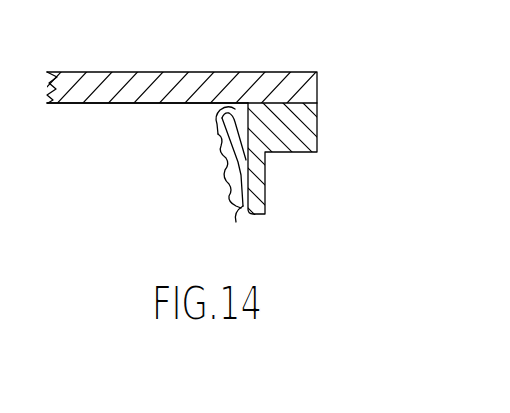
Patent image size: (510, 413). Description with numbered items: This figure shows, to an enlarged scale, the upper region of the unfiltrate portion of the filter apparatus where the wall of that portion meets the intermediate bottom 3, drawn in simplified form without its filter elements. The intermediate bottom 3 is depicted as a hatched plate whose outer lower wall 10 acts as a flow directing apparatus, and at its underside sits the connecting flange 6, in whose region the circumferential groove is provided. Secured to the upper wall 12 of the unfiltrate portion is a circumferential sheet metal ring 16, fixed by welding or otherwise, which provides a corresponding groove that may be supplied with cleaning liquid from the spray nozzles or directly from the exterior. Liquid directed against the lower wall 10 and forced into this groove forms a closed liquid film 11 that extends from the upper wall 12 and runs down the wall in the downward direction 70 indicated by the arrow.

The intermediate bottom 3 is at (150, 80).
The outer lower wall 10 is at (143, 105).
The connecting flange 6 is at (298, 132).
The circumferential sheet metal ring 16 is at (223, 137).
The liquid film 11 is at (226, 167).
The upper wall 12 is at (236, 222).
The downward direction 70 is at (148, 246).